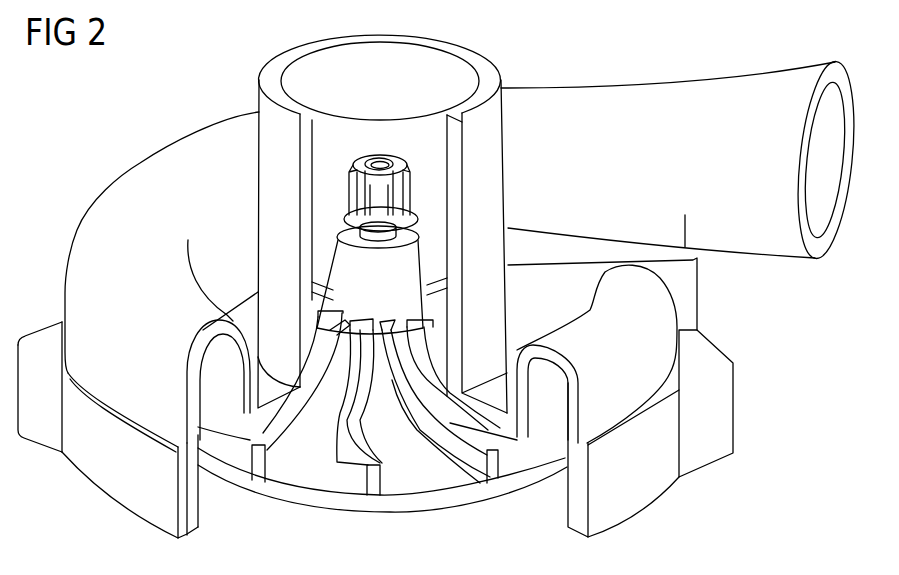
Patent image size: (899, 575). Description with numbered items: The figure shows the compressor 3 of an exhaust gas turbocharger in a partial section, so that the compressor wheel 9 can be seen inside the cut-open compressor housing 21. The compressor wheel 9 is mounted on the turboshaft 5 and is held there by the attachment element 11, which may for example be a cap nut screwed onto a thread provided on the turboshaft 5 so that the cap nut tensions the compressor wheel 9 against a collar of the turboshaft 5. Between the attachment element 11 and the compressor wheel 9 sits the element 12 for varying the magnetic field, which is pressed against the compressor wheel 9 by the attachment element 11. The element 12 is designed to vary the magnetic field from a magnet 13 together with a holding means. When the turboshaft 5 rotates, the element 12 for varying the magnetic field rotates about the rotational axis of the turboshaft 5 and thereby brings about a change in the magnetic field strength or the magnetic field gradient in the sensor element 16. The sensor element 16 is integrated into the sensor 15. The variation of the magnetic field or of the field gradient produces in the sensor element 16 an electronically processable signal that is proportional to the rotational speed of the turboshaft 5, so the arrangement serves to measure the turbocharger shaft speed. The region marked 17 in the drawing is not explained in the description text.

The compressor 3 is at (147, 178).
The turboshaft 5 is at (379, 183).
The compressor wheel 9 is at (348, 470).
The attachment element 11 is at (350, 200).
The element for varying the magnetic field 12 is at (341, 218).
The magnet 13 is at (377, 228).
The sensor 15 is at (590, 320).
The sensor element 16 is at (453, 238).
The inlet socket 17 is at (443, 90).
The compressor housing 21 is at (503, 137).